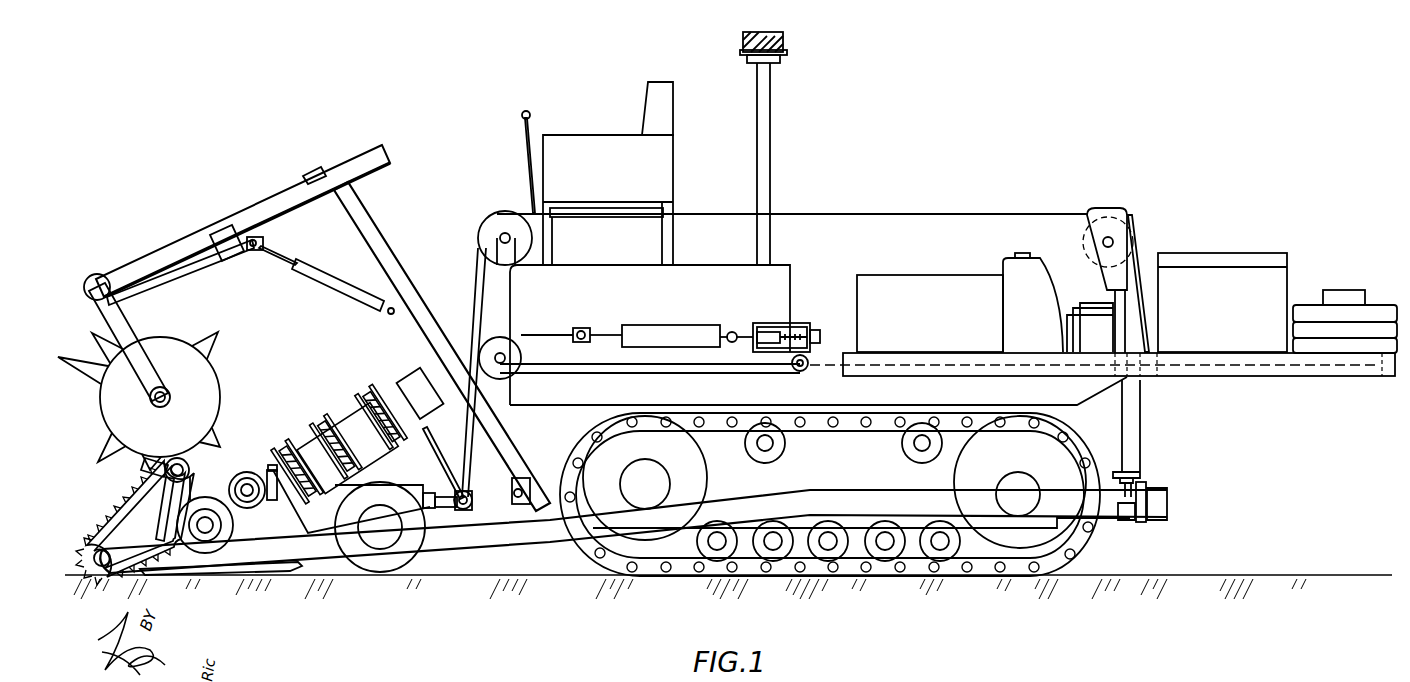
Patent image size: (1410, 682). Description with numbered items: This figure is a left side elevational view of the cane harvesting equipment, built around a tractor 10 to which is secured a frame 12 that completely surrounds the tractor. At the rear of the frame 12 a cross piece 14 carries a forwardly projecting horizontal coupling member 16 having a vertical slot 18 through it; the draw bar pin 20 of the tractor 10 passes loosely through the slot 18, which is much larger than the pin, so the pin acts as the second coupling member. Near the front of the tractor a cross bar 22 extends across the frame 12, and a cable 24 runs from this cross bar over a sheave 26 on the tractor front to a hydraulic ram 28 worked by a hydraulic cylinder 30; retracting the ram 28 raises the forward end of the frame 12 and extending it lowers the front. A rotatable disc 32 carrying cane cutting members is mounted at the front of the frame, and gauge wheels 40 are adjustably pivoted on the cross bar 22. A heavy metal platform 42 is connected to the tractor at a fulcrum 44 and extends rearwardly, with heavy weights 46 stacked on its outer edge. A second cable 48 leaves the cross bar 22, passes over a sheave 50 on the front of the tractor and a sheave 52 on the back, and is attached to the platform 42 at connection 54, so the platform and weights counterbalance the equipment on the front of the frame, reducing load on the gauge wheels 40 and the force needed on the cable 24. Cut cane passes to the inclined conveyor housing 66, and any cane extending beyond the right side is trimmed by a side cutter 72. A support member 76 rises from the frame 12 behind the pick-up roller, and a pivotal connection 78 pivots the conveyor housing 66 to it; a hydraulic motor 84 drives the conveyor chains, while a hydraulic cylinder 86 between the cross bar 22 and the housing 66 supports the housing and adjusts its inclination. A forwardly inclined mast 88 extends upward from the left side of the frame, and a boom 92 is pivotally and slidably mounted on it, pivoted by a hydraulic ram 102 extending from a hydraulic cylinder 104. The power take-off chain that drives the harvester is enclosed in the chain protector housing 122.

The tractor 10 is at (842, 257).
The frame 12 is at (537, 530).
The cross piece 14 is at (1160, 520).
The coupling member 16 is at (1140, 522).
The slot 18 is at (1120, 547).
The draw bar pin 20 is at (1140, 488).
The cross bar 22 is at (477, 540).
The cable 24 is at (477, 443).
The sheave 26 is at (522, 357).
The hydraulic ram 28 is at (600, 330).
The hydraulic cylinder 30 is at (683, 325).
The rotatable disc 32 is at (280, 578).
The gauge wheels 40 is at (385, 573).
The platform 42 is at (1245, 377).
The fulcrum 44 is at (798, 372).
The weights 46 is at (1345, 293).
The second cable 48 is at (475, 283).
The sheave 50 is at (490, 217).
The sheave 52 is at (1137, 240).
The connection 54 is at (1147, 350).
The inclined conveyor housing 66 is at (348, 423).
The side cutter 72 is at (190, 465).
The support member 76 is at (280, 483).
The pivotal connection 78 is at (275, 462).
The hydraulic motor 84 is at (428, 415).
The hydraulic cylinder 86 is at (433, 460).
The mast 88 is at (367, 233).
The boom 92 is at (277, 205).
The hydraulic ram 102 is at (267, 253).
The hydraulic cylinder 104 is at (320, 287).
The power take-off chain protector housing 122 is at (1087, 305).